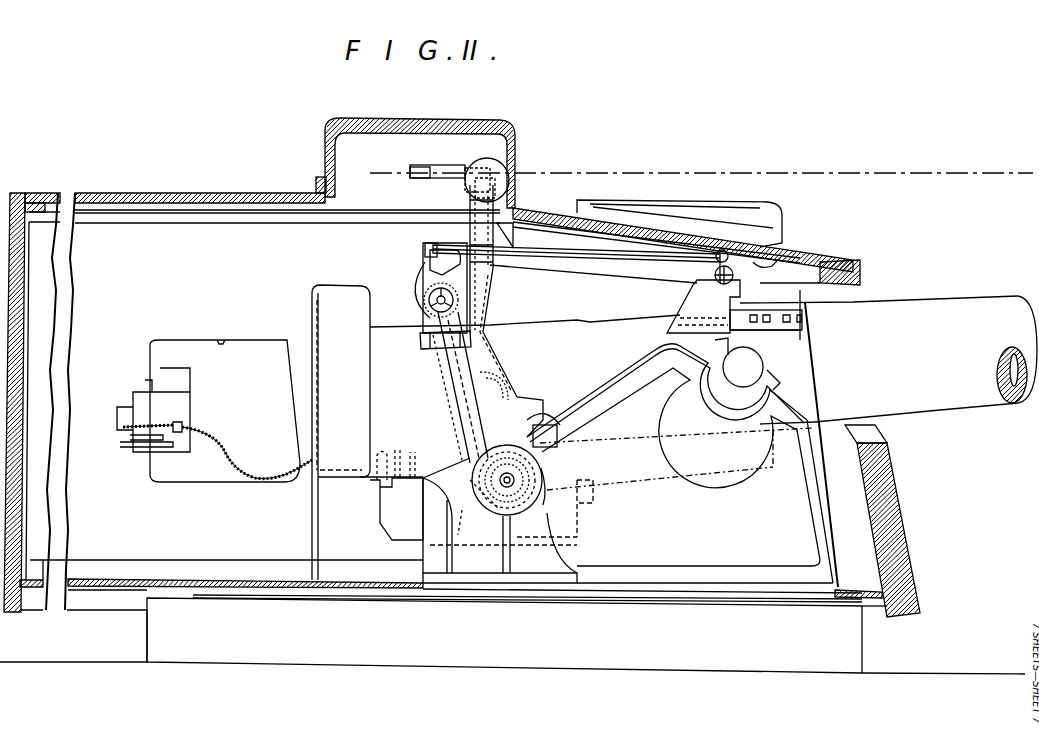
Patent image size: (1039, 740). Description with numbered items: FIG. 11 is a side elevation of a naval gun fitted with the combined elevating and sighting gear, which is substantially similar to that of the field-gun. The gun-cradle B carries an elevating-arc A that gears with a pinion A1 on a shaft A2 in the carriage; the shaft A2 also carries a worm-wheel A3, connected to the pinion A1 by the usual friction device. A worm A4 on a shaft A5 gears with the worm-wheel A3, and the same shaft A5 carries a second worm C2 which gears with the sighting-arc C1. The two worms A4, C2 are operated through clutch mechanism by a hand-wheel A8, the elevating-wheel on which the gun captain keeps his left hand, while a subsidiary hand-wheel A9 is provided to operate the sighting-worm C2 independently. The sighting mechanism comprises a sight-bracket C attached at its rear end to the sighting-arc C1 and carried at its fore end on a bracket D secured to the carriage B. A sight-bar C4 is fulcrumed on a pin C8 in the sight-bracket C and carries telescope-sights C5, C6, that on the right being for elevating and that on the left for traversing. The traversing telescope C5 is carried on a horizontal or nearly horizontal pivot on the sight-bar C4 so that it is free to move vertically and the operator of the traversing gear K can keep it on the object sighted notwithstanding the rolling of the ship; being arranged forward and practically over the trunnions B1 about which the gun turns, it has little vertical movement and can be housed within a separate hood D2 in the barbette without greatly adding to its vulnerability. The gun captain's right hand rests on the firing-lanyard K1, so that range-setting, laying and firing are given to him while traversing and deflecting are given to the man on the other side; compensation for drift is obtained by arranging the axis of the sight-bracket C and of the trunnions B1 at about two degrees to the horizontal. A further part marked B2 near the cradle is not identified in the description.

The elevating-arc A is at (497, 523).
The pinion A1 is at (518, 475).
The shaft A2 is at (520, 478).
The worm-wheel A3 is at (542, 492).
The worm A4 is at (477, 511).
The shaft A5 is at (458, 408).
The hand-wheel A8 is at (440, 257).
The subsidiary hand-wheel A9 is at (427, 310).
The gun-cradle B is at (680, 460).
The trunnions B1 is at (743, 367).
The pivot block B2 is at (563, 420).
The sight-bracket C is at (600, 268).
The sighting-arc C1 is at (491, 306).
The sighting-worm C2 is at (420, 338).
The sight-bar C4 is at (535, 251).
The traversing telescope C5 is at (762, 251).
The telescope-sight C6 is at (437, 173).
The pin C8 is at (497, 267).
The bracket D is at (680, 297).
The hood D2 is at (675, 214).
The traversing gear K is at (275, 481).
The firing-lanyard K1 is at (220, 442).